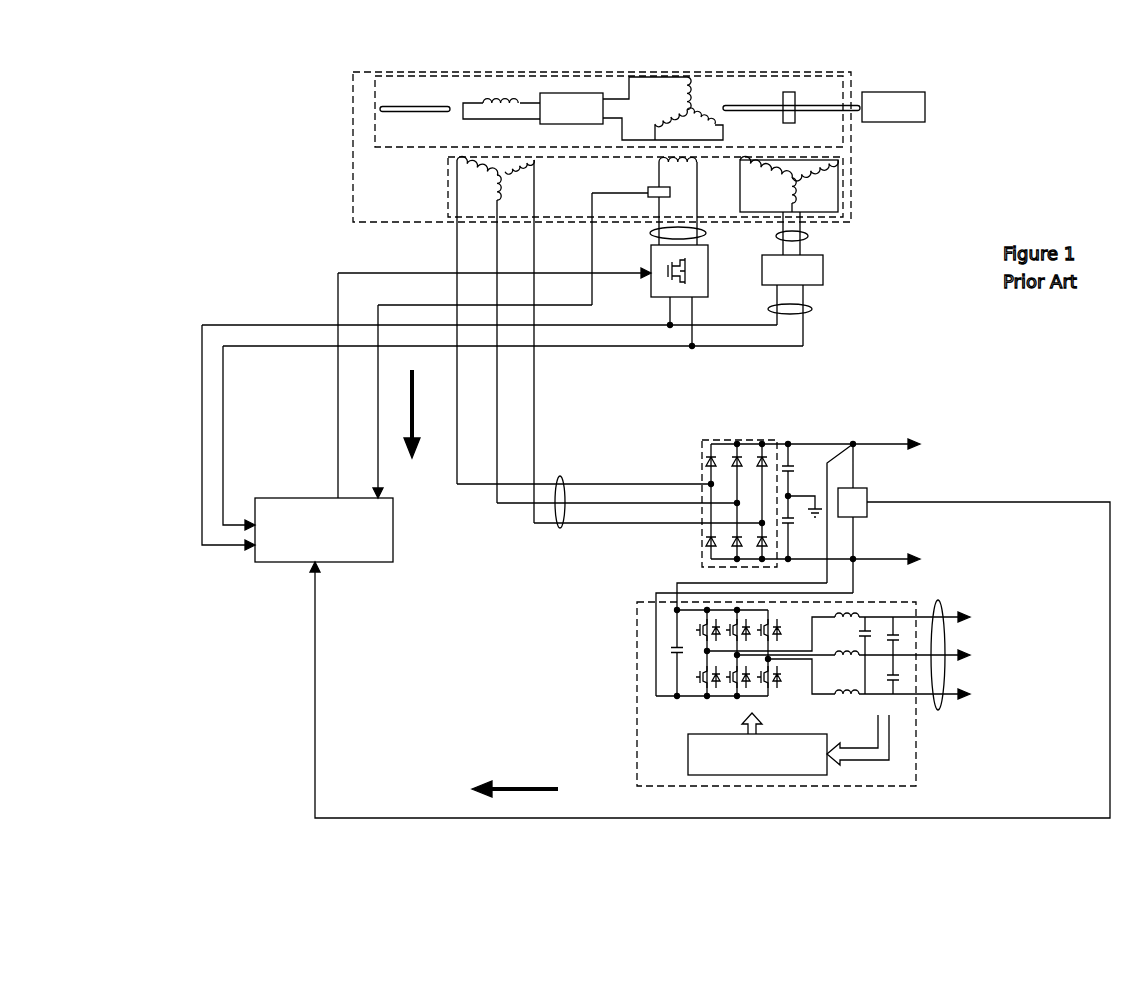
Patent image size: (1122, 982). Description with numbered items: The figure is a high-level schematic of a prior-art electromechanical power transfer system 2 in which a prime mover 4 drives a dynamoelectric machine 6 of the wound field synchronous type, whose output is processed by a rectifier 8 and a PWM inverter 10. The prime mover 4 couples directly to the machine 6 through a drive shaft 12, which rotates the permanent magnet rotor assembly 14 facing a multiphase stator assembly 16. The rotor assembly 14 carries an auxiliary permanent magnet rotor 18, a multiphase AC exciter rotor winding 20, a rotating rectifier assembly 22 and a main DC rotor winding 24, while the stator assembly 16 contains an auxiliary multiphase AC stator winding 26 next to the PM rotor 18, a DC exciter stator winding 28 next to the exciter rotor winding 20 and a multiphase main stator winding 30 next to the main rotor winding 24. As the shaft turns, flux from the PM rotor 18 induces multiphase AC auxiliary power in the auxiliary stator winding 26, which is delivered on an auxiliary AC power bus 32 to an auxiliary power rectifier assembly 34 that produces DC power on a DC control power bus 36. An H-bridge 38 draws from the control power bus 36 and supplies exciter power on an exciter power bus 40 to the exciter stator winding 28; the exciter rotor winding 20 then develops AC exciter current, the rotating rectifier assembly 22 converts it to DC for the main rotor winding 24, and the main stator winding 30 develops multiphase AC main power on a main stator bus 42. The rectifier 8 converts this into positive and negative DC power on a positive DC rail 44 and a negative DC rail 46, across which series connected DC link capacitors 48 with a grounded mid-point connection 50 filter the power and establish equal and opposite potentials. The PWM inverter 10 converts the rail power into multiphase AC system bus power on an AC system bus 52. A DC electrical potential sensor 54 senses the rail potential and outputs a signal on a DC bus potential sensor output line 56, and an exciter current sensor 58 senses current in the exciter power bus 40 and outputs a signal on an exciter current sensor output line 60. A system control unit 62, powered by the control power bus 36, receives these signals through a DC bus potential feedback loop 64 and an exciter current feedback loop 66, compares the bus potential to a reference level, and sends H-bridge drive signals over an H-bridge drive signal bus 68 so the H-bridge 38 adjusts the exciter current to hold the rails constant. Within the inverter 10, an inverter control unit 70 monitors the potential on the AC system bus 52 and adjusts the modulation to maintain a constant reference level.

The electromechanical power transfer system 2 is at (232, 153).
The prime mover 4 is at (893, 107).
The dynamoelectric machine 6 is at (353, 186).
The rectifier 8 is at (718, 440).
The PWM inverter 10 is at (637, 696).
The drive shaft 12 is at (852, 96).
The permanent magnet rotor assembly 14 is at (844, 142).
The multiphase stator assembly 16 is at (842, 198).
The auxiliary permanent magnet rotor 18 is at (795, 112).
The multiphase AC exciter rotor winding 20 is at (668, 120).
The rotating rectifier assembly 22 is at (571, 108).
The main DC rotor winding 24 is at (491, 101).
The auxiliary multiphase AC stator winding 26 is at (793, 190).
The DC exciter stator winding 28 is at (688, 164).
The multiphase main stator winding 30 is at (520, 163).
The auxiliary AC power bus 32 is at (808, 237).
The auxiliary power rectifier assembly 34 is at (792, 270).
The DC control power bus 36 is at (811, 310).
The H-bridge 38 is at (708, 280).
The exciter power bus 40 is at (694, 234).
The main stator bus 42 is at (562, 528).
The positive DC rail 44 is at (880, 446).
The negative DC rail 46 is at (880, 561).
The DC link capacitors 48 is at (792, 472).
The mid-point connection 50 is at (790, 497).
The AC system bus 52 is at (940, 708).
The DC electrical potential sensor 54 is at (868, 493).
The DC bus potential sensor output line 56 is at (932, 502).
The exciter current sensor 58 is at (657, 186).
The exciter current sensor output line 60 is at (592, 266).
The system control unit 62 is at (502, 433).
The DC bus potential feedback loop 64 is at (530, 786).
The exciter current feedback loop 66 is at (414, 400).
The H-bridge drive signal bus 68 is at (338, 387).
The inverter control unit 70 is at (788, 744).